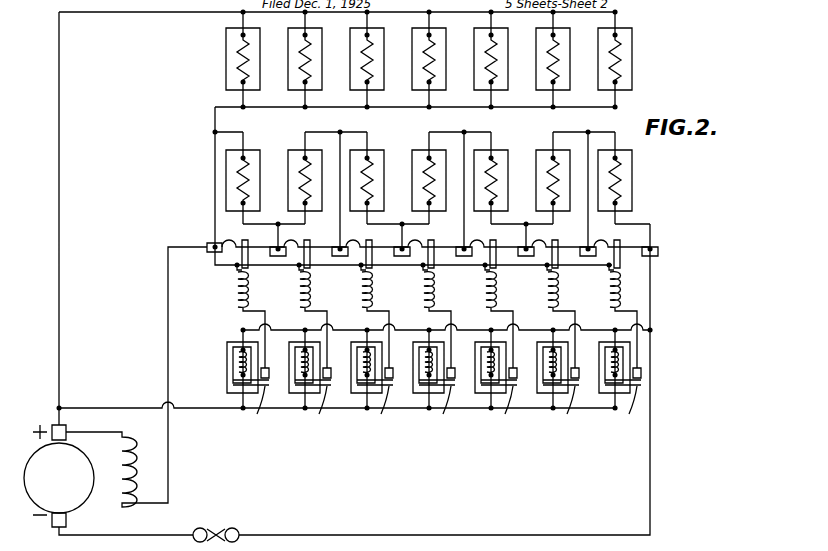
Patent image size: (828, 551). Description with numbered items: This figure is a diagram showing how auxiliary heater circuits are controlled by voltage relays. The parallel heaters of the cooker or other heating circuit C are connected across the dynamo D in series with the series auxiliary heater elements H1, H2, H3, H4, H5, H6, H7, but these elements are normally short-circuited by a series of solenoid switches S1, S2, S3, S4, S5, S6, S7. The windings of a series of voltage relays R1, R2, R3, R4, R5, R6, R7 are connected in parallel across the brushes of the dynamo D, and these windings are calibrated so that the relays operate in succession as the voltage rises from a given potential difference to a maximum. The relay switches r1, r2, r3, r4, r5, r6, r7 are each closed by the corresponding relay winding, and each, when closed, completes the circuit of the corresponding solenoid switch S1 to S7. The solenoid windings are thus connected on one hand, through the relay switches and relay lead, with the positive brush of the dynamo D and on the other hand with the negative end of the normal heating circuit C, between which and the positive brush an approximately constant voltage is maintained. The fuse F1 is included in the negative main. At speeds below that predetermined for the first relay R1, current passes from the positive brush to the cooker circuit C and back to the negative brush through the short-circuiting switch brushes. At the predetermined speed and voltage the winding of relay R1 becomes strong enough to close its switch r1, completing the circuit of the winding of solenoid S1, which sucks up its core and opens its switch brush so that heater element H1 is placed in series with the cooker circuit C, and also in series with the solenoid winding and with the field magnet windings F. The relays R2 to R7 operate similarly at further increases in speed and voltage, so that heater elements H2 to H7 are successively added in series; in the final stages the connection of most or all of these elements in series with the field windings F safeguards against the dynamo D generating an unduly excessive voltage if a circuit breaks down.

The heating circuit C is at (414, 59).
The series auxiliary heater element H1 is at (237, 176).
The series auxiliary heater element H2 is at (301, 165).
The series auxiliary heater element H3 is at (372, 166).
The series auxiliary heater element H4 is at (418, 180).
The series auxiliary heater element H5 is at (495, 163).
The series auxiliary heater element H6 is at (555, 182).
The series auxiliary heater element H7 is at (627, 172).
The solenoid switch S1 is at (255, 301).
The solenoid switch S2 is at (317, 300).
The solenoid switch S3 is at (368, 245).
The solenoid switch S4 is at (440, 300).
The solenoid switch S5 is at (498, 300).
The solenoid switch S6 is at (564, 300).
The solenoid switch S7 is at (626, 300).
The voltage relay R1 is at (236, 369).
The voltage relay R2 is at (301, 369).
The voltage relay R3 is at (362, 369).
The voltage relay R4 is at (424, 369).
The voltage relay R5 is at (486, 369).
The voltage relay R6 is at (548, 369).
The voltage relay R7 is at (610, 369).
The relay switch r1 is at (257, 410).
The relay switch r2 is at (318, 410).
The relay switch r3 is at (379, 410).
The relay switch r4 is at (441, 410).
The relay switch r5 is at (503, 410).
The relay switch r6 is at (565, 410).
The relay switch r7 is at (626, 410).
The dynamo D is at (59, 476).
The field magnet windings F is at (118, 470).
The fuse F1 is at (210, 531).